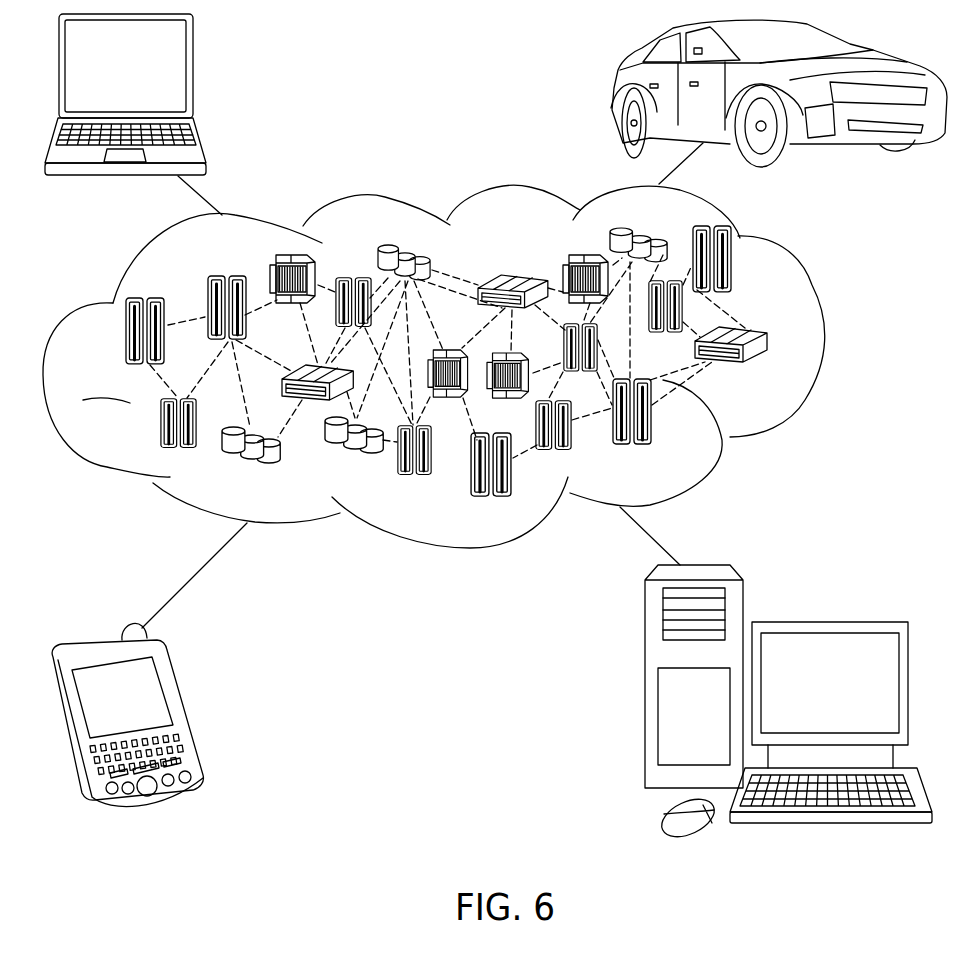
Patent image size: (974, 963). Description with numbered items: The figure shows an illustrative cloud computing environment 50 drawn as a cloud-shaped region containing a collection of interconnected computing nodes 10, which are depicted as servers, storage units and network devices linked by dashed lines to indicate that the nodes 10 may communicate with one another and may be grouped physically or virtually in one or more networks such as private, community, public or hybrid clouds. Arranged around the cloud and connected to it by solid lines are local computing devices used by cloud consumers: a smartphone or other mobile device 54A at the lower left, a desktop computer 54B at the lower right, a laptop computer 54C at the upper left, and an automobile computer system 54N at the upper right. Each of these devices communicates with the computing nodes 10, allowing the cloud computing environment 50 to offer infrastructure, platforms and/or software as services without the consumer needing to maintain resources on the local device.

The laptop computer 54C is at (193, 76).
The automobile computer system 54N is at (617, 92).
The smartphone or other mobile device 54A is at (183, 710).
The desktop computer 54B is at (827, 622).
The cloud computing environment 50 is at (823, 342).
The computing nodes 10 is at (772, 372).